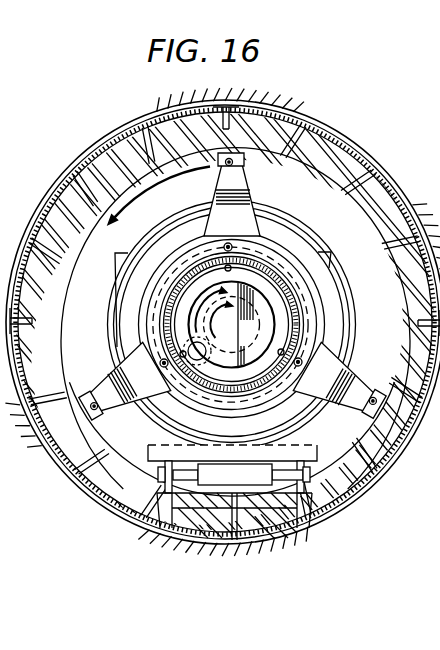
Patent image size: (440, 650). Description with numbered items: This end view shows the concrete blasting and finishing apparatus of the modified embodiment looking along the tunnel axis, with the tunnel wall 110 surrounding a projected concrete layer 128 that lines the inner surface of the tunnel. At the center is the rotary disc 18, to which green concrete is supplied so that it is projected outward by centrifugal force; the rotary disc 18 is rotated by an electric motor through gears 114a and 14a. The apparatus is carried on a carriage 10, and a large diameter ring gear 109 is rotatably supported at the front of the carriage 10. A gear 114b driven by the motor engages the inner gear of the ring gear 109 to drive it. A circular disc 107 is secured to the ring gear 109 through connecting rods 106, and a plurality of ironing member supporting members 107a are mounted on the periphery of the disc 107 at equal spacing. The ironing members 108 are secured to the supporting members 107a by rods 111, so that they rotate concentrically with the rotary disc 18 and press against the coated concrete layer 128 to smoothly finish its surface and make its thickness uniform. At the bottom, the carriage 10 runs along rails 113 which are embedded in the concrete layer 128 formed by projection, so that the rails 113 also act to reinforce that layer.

The tunnel wall 110 is at (300, 121).
The concrete layer 128 is at (70, 204).
The carriage 10 is at (142, 468).
The ring gear 109 is at (113, 258).
The rods 111 is at (173, 247).
The circular disc 107 is at (320, 262).
The ironing member supporting members 107a is at (244, 186).
The ironing members 108 is at (246, 160).
The connecting rods 106 is at (228, 243).
The gear 114b is at (156, 305).
The gear 14a is at (317, 324).
The rotary disc 18 is at (272, 282).
The gear 114a is at (227, 397).
The rails 113 is at (168, 500).